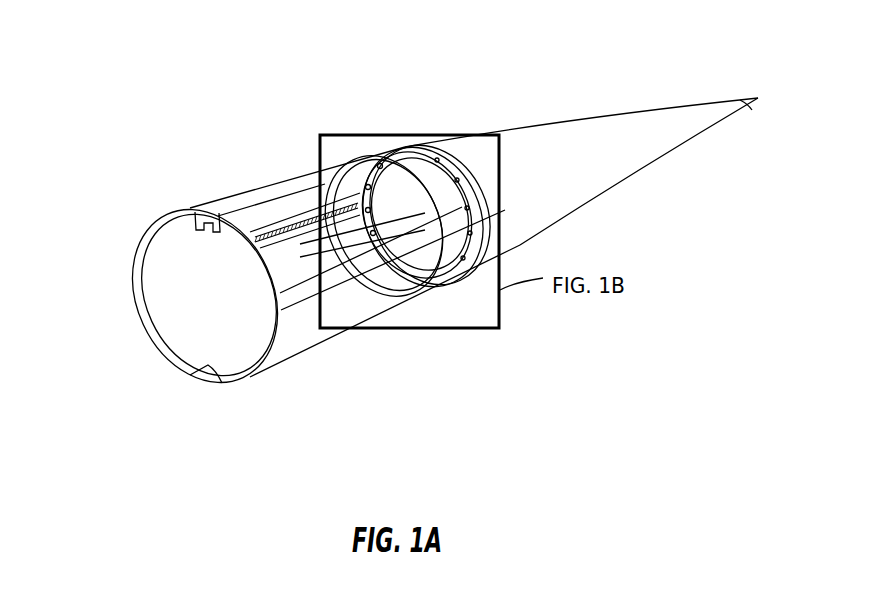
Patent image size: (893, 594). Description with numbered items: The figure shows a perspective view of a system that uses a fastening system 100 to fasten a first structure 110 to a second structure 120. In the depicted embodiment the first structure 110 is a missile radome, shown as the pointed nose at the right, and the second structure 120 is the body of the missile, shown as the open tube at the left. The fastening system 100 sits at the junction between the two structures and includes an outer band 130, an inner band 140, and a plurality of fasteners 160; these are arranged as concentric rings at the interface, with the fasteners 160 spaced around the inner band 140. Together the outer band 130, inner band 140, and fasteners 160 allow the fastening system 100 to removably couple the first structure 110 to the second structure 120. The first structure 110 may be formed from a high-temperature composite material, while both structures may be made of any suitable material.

The fastening system 100 is at (418, 217).
The first structure 110 is at (562, 142).
The second structure 120 is at (296, 330).
The outer band 130 is at (422, 147).
The inner band 140 is at (373, 236).
The plurality of fasteners 160 is at (366, 186).